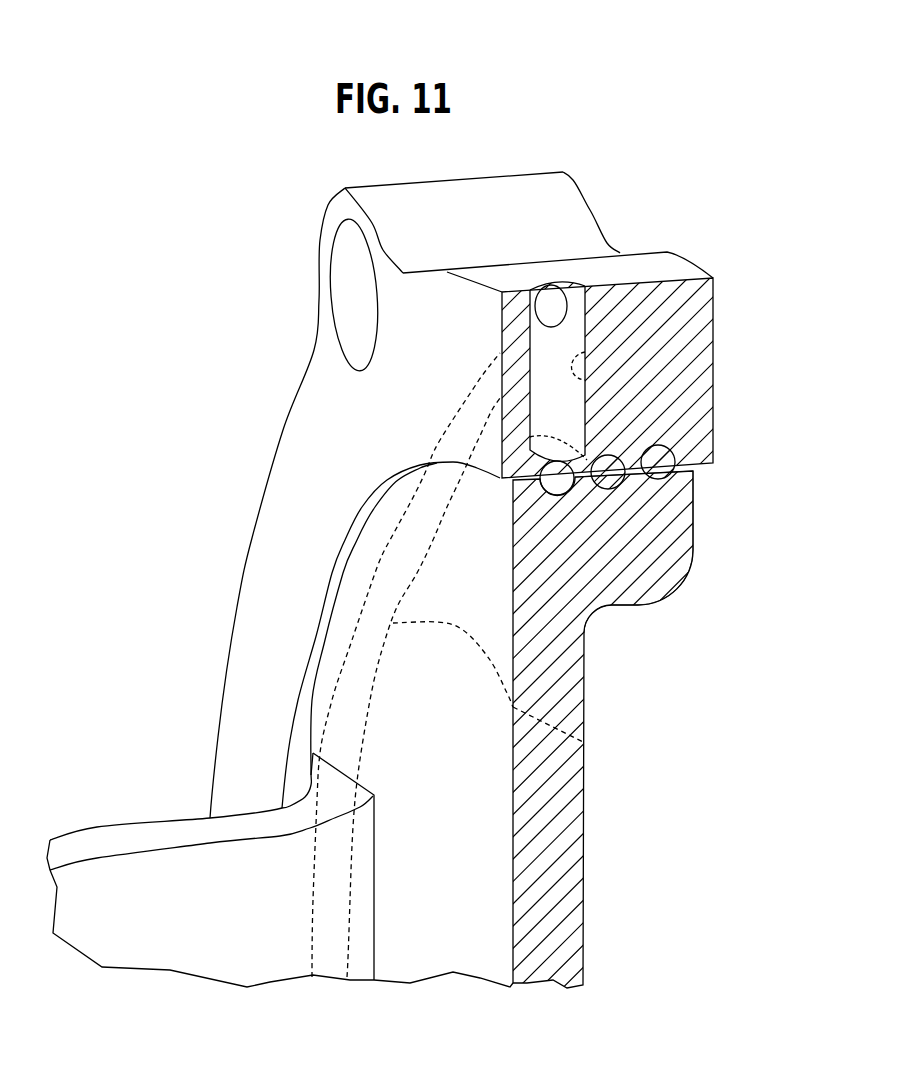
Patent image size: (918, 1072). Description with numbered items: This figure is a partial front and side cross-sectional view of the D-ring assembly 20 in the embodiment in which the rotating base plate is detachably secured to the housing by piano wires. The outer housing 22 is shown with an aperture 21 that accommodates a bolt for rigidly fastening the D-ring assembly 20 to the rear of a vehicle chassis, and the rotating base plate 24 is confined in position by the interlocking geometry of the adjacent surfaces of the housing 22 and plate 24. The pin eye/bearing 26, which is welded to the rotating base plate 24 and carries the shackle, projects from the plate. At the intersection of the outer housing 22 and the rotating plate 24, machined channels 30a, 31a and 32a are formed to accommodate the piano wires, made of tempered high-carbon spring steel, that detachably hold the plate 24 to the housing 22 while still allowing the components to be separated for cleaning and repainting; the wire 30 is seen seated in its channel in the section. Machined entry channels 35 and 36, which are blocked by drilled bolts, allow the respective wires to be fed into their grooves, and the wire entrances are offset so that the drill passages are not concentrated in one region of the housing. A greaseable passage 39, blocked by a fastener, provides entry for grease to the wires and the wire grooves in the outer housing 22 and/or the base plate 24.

The D-ring assembly 20 is at (668, 180).
The aperture 21 is at (320, 278).
The outer housing 22 is at (308, 539).
The rotating base plate 24 is at (433, 751).
The pin eye/bearing 26 is at (147, 840).
The piano wire 30 is at (583, 742).
The machined channel 30a is at (585, 580).
The machined channel 31a is at (610, 493).
The machined channel 32a is at (693, 500).
The machined channel 35 is at (612, 455).
The machined channel 36 is at (664, 444).
The greaseable passage 39 is at (577, 357).